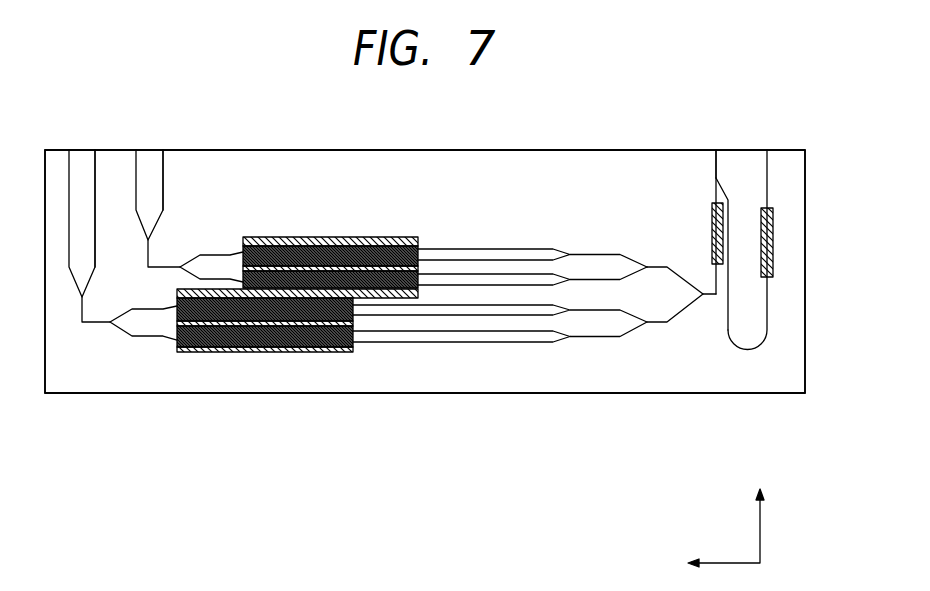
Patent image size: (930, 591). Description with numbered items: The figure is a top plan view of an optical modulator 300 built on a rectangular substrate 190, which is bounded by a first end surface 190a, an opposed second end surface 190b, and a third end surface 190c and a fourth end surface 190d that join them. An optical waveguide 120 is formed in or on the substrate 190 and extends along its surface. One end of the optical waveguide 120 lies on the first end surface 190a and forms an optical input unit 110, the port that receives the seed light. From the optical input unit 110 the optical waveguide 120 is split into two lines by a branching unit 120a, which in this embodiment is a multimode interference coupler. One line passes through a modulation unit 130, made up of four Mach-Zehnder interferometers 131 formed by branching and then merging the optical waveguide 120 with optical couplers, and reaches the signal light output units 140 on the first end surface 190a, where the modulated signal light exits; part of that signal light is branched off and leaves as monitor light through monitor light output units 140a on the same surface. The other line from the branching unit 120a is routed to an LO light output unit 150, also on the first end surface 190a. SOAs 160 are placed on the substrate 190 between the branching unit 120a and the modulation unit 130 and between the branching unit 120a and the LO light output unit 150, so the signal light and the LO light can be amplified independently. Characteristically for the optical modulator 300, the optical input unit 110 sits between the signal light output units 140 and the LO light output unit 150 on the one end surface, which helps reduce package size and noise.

The optical modulator 300 is at (71, 68).
The optical input unit 110 is at (716, 150).
The optical waveguide 120 is at (716, 168).
The branching unit 120a is at (715, 179).
The modulation unit 130 is at (453, 326).
The Mach-Zehnder interferometer 131 is at (517, 343).
The signal light output unit 140 is at (69, 150).
The monitor light output unit 140a is at (95, 150).
The LO light output unit 150 is at (767, 150).
The SOA 160 is at (773, 208).
The substrate 190 is at (125, 385).
The first end surface 190a is at (240, 150).
The second end surface 190b is at (178, 395).
The third end surface 190c is at (47, 372).
The fourth end surface 190d is at (803, 372).